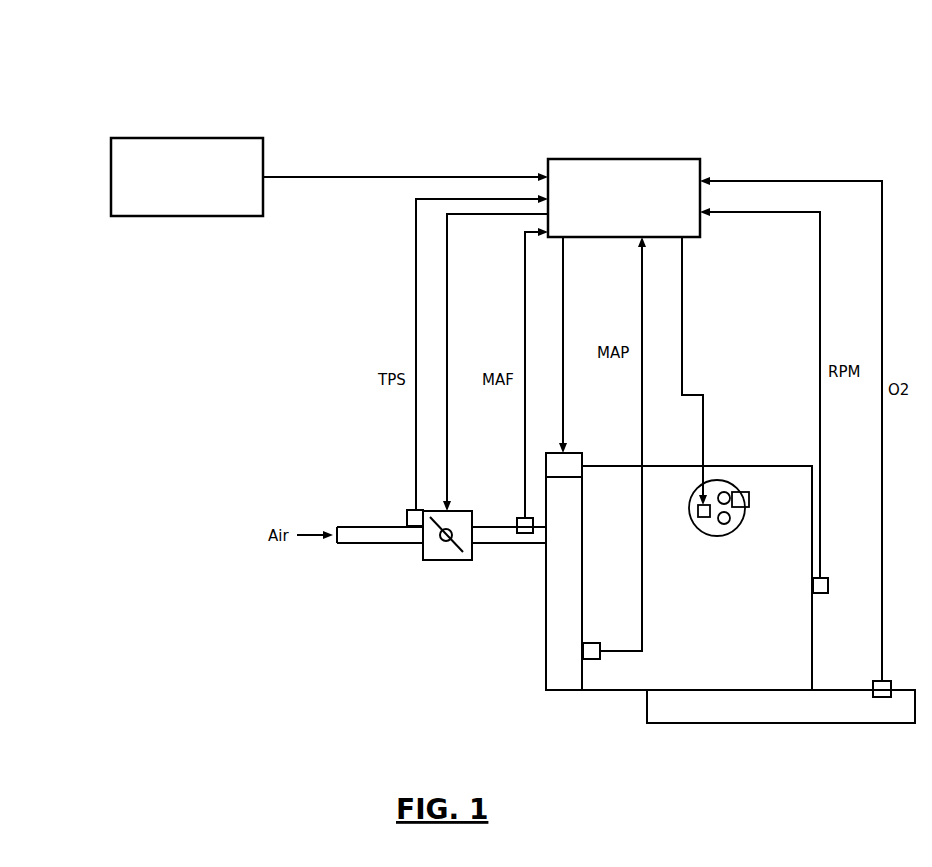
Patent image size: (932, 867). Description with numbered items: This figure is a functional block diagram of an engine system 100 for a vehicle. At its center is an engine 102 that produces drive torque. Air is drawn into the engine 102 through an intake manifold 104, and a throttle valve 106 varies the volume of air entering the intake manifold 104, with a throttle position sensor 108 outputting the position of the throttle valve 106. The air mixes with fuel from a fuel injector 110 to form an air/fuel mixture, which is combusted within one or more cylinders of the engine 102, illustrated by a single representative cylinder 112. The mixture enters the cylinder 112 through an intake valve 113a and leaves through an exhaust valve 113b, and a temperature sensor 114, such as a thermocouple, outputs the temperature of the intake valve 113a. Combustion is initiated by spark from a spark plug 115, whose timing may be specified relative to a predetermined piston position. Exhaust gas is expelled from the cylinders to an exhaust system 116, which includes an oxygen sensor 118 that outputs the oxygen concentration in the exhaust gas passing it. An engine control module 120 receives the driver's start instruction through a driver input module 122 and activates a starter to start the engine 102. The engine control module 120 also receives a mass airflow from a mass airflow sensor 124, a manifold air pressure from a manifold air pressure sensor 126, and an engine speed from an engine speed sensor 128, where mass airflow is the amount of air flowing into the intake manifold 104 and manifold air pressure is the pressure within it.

The engine system 100 is at (121, 41).
The engine 102 is at (752, 466).
The intake manifold 104 is at (562, 690).
The throttle valve 106 is at (447, 560).
The throttle position sensor 108 is at (408, 511).
The fuel injector 110 is at (580, 453).
The cylinder 112 is at (717, 536).
The intake valve 113a is at (730, 492).
The exhaust valve 113b is at (728, 523).
The temperature sensor 114 is at (749, 506).
The spark plug 115 is at (703, 518).
The exhaust system 116 is at (753, 724).
The oxygen sensor 118 is at (882, 697).
The engine control module 120 is at (630, 159).
The driver input module 122 is at (194, 138).
The mass airflow sensor 124 is at (525, 534).
The manifold air pressure sensor 126 is at (590, 643).
The engine speed sensor 128 is at (820, 593).